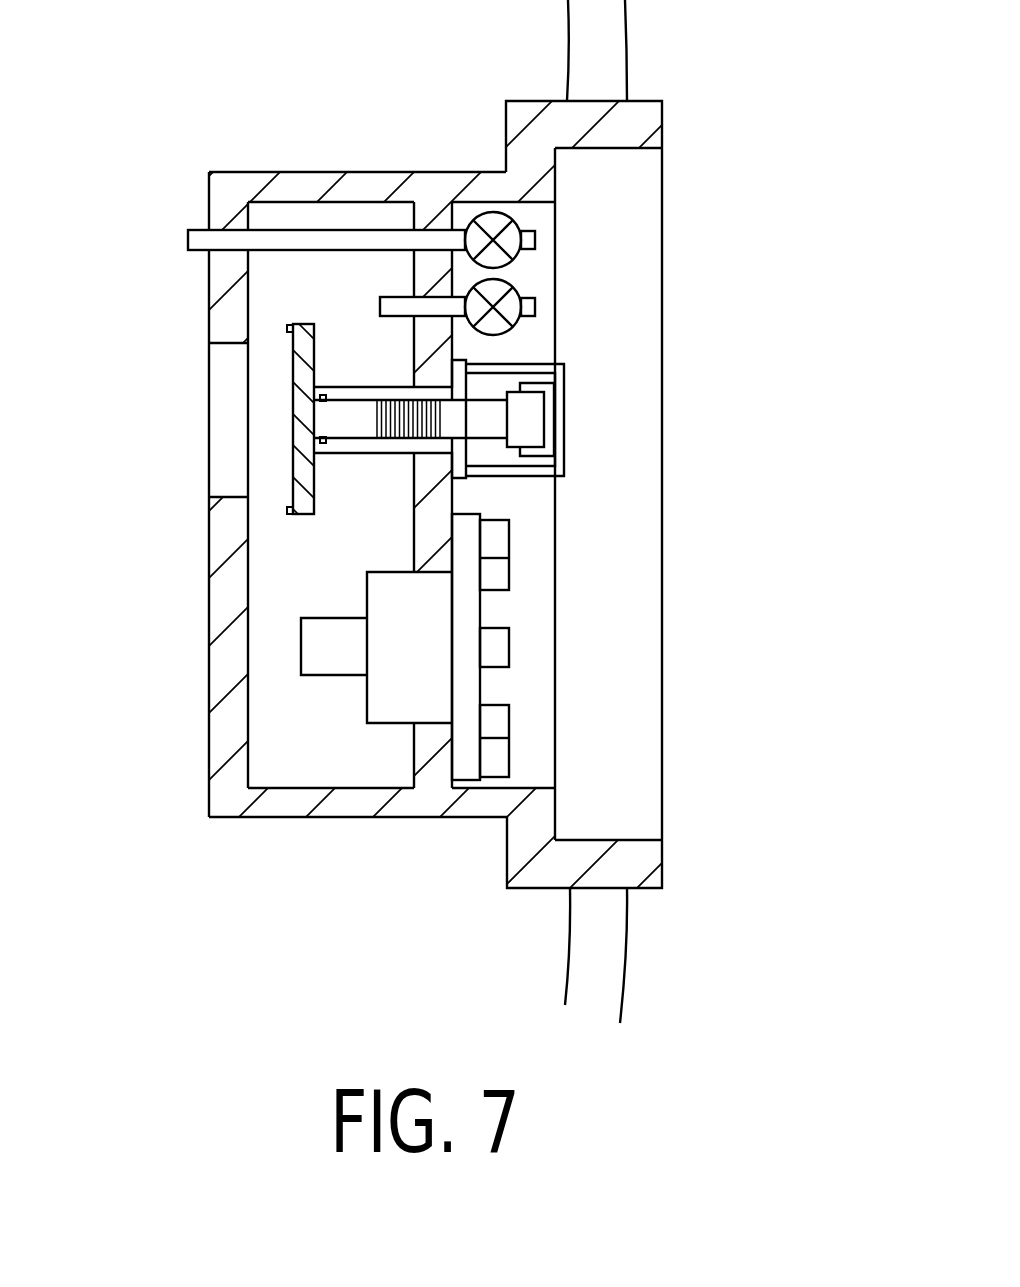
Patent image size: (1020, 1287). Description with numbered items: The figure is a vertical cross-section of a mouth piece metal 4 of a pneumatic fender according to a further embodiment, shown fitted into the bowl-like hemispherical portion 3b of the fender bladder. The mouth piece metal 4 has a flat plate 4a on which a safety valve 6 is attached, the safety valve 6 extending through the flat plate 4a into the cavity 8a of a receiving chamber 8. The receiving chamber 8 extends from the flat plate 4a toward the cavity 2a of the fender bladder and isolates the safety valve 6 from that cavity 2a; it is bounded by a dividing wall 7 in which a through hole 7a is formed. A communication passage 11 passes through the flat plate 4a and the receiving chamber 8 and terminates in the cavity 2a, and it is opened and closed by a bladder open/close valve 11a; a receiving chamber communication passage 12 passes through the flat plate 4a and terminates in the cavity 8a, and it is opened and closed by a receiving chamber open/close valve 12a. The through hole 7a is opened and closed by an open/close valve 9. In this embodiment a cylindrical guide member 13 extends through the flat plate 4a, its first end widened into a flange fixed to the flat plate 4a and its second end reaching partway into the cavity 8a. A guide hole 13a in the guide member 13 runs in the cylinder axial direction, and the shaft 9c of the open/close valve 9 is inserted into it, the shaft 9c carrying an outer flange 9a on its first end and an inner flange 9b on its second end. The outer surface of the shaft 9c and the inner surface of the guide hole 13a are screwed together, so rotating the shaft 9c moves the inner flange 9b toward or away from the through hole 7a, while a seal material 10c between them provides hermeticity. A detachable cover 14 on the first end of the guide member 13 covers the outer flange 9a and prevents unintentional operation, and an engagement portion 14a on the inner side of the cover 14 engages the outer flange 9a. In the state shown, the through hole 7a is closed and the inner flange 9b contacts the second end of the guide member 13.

The cavity 2a is at (142, 826).
The hemispherical portion 3b is at (618, 947).
The mouth piece metal 4 is at (670, 245).
The flat plate 4a is at (414, 552).
The safety valve 6 is at (368, 695).
The dividing wall 7 is at (218, 664).
The through hole 7a is at (212, 496).
The receiving chamber 8 is at (363, 820).
The cavity of the receiving chamber 8a is at (282, 775).
The open/close valve 9 is at (408, 440).
The outer flange 9a is at (532, 417).
The inner flange 9b is at (297, 430).
The shaft 9c is at (453, 423).
The seal material 10c is at (342, 345).
The communication passage 11 is at (198, 246).
The bladder open/close valve 11a is at (513, 231).
The receiving chamber communication passage 12 is at (398, 298).
The receiving chamber open/close valve 12a is at (522, 290).
The guide member 13 is at (397, 387).
The guide hole 13a is at (370, 437).
The cover 14 is at (565, 380).
The engagement portion 14a is at (548, 457).